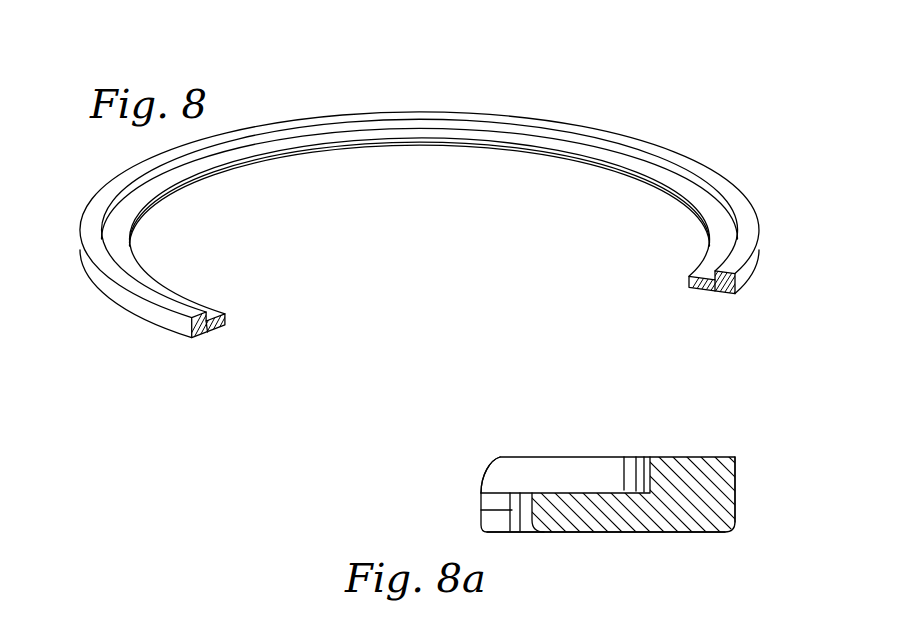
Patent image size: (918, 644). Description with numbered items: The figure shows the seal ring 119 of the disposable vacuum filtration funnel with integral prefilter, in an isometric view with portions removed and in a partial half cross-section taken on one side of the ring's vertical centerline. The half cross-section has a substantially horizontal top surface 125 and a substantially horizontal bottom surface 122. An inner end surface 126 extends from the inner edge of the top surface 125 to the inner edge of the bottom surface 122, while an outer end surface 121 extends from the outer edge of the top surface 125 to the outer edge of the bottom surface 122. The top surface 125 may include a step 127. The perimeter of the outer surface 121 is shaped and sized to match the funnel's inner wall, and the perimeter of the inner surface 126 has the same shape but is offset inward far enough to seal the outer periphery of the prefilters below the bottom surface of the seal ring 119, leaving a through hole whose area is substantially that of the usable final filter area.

In FIG. 8, the seal ring 119 is at (100, 340).
In FIG. 8A, the seal ring 119 is at (422, 483).
In FIG. 8A, the outer end surface 121 is at (735, 491).
In FIG. 8A, the bottom surface 122 is at (660, 532).
In FIG. 8A, the top surface 125 is at (562, 490).
In FIG. 8A, the inner end surface 126 is at (510, 494).
In FIG. 8A, the step 127 is at (605, 443).